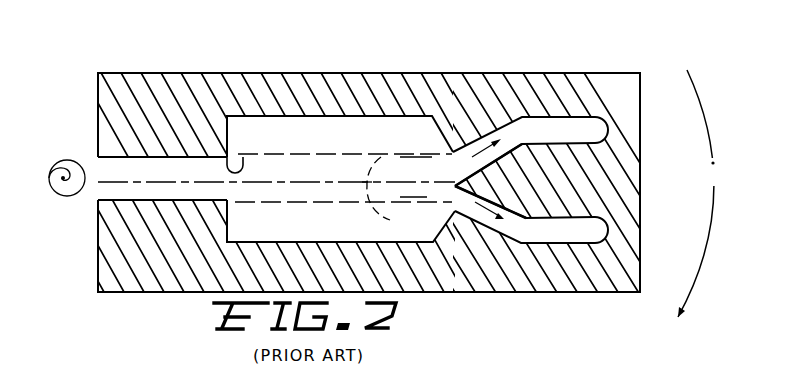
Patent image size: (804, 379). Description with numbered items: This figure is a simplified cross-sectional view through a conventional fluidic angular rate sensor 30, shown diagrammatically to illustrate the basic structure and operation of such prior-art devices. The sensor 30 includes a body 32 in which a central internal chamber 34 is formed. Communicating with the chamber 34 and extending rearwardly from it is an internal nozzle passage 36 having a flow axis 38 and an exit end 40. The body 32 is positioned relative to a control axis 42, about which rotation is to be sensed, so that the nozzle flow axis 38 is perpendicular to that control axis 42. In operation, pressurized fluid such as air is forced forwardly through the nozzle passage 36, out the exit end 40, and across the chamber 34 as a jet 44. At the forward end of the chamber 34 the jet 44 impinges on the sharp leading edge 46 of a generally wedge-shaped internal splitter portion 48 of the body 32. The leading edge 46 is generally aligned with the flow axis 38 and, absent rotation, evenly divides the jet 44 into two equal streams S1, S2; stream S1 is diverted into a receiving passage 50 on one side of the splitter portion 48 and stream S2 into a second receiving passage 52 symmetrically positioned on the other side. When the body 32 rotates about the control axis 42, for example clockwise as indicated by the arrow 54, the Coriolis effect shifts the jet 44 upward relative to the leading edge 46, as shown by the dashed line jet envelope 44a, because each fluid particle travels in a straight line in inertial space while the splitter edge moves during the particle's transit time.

The conventional fluidic angular rate sensor 30 is at (402, 65).
The body 32 is at (170, 85).
The central internal chamber 34 is at (341, 121).
The internal nozzle passage 36 is at (189, 153).
The flow axis 38 is at (128, 182).
The exit end 40 is at (238, 164).
The control axis 42 is at (49, 178).
The jet 44 is at (298, 160).
The dashed line jet envelope 44a is at (396, 197).
The sharp leading edge 46 is at (455, 186).
The wedge-shaped internal splitter portion 48 is at (513, 190).
The receiving passage 50 is at (582, 130).
The second receiving passage 52 is at (577, 232).
The arrow 54 is at (707, 250).
The stream S1 is at (481, 141).
The stream S2 is at (479, 209).